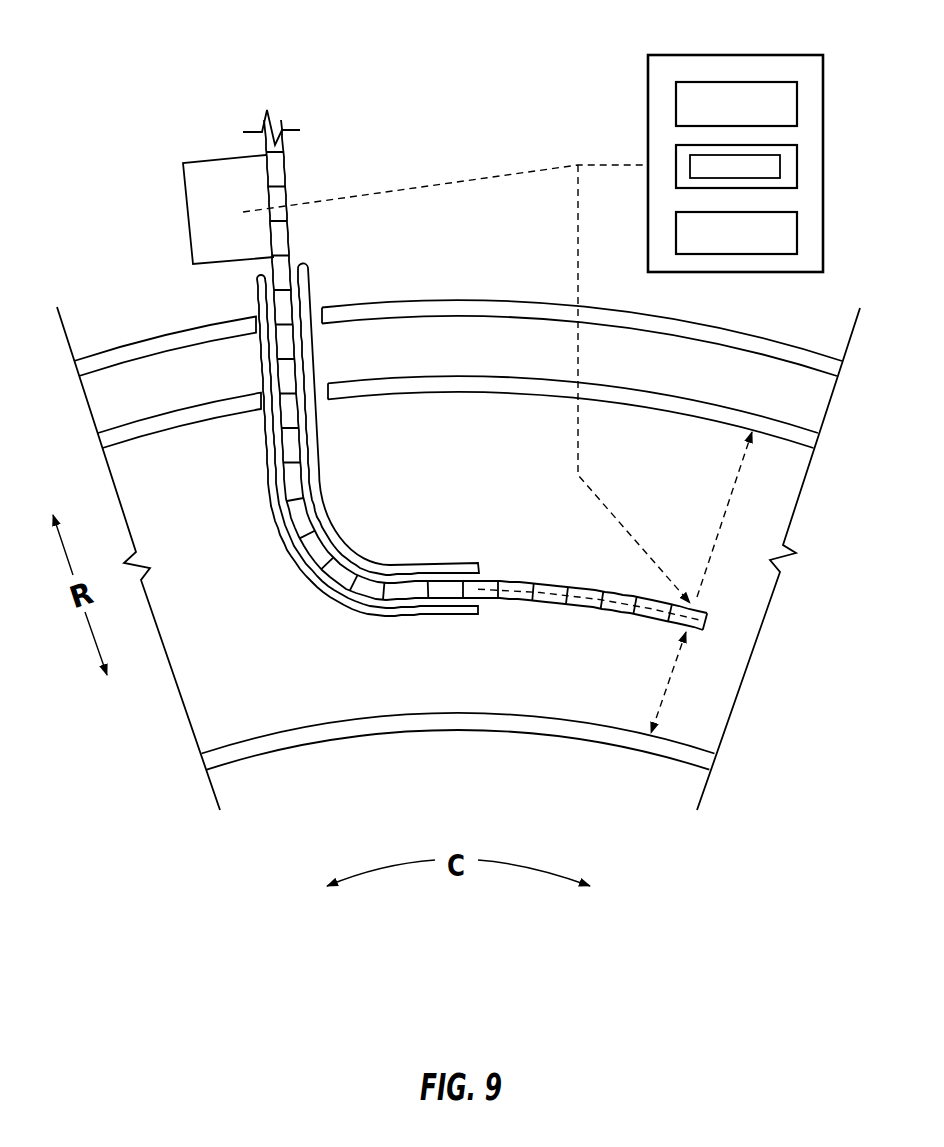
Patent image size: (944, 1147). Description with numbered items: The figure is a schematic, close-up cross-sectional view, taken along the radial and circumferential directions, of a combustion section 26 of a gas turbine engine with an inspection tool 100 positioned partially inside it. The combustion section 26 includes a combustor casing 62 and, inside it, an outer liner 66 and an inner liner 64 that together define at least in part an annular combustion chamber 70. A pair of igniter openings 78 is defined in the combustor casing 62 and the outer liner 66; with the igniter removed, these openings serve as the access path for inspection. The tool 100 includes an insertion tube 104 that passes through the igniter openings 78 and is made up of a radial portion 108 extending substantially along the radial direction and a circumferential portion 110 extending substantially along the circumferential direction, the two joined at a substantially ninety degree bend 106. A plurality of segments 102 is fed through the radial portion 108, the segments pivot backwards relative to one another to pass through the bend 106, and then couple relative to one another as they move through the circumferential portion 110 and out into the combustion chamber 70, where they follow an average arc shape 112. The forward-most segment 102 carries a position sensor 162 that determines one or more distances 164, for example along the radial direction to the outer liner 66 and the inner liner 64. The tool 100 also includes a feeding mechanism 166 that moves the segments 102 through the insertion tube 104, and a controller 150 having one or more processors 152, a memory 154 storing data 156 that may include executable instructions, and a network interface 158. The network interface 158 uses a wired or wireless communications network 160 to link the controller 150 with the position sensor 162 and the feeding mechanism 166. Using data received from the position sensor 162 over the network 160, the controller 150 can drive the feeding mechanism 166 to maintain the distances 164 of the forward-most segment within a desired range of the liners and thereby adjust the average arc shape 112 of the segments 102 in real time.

The combustion section 26 is at (70, 125).
The tool 100 is at (488, 86).
The communications network 160 is at (568, 162).
The feeding mechanism 166 is at (198, 207).
The plurality of segments 102 is at (283, 238).
The igniter openings 78 is at (262, 314).
The radial portion 108 is at (263, 421).
The insertion tube 104 is at (329, 474).
The bend 106 is at (313, 602).
The circumferential portion 110 is at (452, 617).
The average arc shape 112 is at (555, 600).
The combustion chamber 70 is at (502, 517).
The position sensor 162 is at (702, 610).
The combustor casing 62 is at (748, 338).
The outer liner 66 is at (680, 396).
The distances 164 is at (733, 483).
The inner liner 64 is at (497, 732).
The controller 150 is at (772, 142).
The processors 152 is at (753, 116).
The memory 154 is at (799, 160).
The data 156 is at (782, 166).
The network interface 158 is at (799, 238).